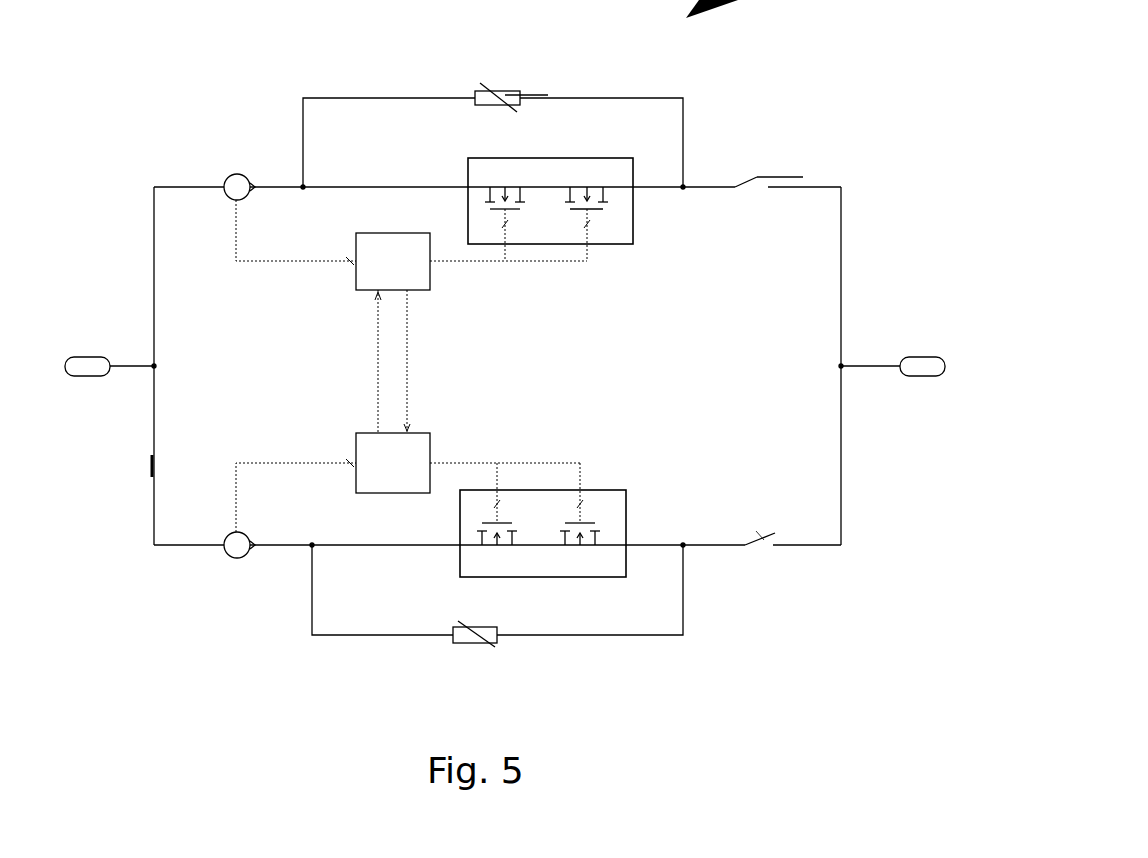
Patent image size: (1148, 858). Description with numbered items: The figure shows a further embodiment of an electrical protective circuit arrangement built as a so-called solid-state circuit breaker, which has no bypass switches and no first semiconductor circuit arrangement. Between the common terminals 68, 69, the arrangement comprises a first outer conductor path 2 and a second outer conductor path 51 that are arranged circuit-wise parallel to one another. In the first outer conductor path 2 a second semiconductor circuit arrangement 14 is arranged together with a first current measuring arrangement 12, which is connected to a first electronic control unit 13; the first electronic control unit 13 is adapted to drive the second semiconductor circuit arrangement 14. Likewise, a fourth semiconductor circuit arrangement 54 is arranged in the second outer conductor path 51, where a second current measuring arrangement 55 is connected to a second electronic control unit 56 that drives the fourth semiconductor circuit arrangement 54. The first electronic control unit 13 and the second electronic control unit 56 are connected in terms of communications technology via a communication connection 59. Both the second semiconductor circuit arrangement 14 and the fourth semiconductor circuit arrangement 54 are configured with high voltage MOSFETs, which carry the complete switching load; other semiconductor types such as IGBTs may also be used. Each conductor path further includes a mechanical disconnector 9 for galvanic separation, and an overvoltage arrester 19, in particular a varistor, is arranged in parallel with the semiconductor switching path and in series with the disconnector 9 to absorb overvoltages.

The first outer conductor path 2 is at (468, 364).
The first mechanical disconnector 9 is at (813, 592).
The first current measuring arrangement 12 is at (497, 151).
The first electronic control unit 13 is at (417, 280).
The second semiconductor circuit arrangement 14 is at (633, 244).
The overvoltage arrester 19 is at (547, 680).
The second outer conductor path 51 is at (452, 500).
The fourth semiconductor circuit arrangement 54 is at (626, 524).
The second current measuring arrangement 55 is at (227, 555).
The second electronic control unit 56 is at (418, 462).
The communication connection 59 is at (407, 343).
The common terminal 68 is at (100, 376).
The common terminal 69 is at (892, 328).